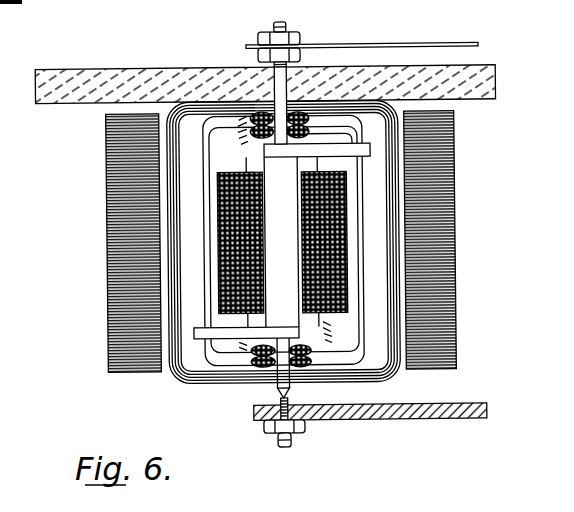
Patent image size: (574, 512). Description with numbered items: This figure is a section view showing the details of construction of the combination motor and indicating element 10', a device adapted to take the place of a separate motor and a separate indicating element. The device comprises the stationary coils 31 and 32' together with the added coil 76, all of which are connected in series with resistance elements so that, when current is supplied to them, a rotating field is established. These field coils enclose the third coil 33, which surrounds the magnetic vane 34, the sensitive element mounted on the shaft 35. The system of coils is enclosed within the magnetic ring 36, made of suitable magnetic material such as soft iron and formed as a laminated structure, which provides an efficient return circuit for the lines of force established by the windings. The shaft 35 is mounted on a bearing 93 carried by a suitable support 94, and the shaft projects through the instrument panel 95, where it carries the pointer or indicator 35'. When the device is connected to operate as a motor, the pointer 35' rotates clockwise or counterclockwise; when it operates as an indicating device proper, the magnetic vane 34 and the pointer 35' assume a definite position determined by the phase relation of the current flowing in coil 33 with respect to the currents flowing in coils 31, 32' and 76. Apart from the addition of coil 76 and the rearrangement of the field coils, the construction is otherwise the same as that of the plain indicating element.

The combination motor and indicating element 10' is at (268, 235).
The stationary coil 31 is at (170, 341).
The rearranged stationary coil 32' is at (332, 241).
The third coil 33 is at (345, 229).
The magnetic vane 34 is at (266, 154).
The shaft 35 is at (257, 219).
The pointer 35' is at (362, 25).
The magnetic ring 36 is at (446, 155).
The coil 76 is at (218, 351).
The bearing 93 is at (292, 397).
The support 94 is at (355, 419).
The instrument panel 95 is at (477, 89).